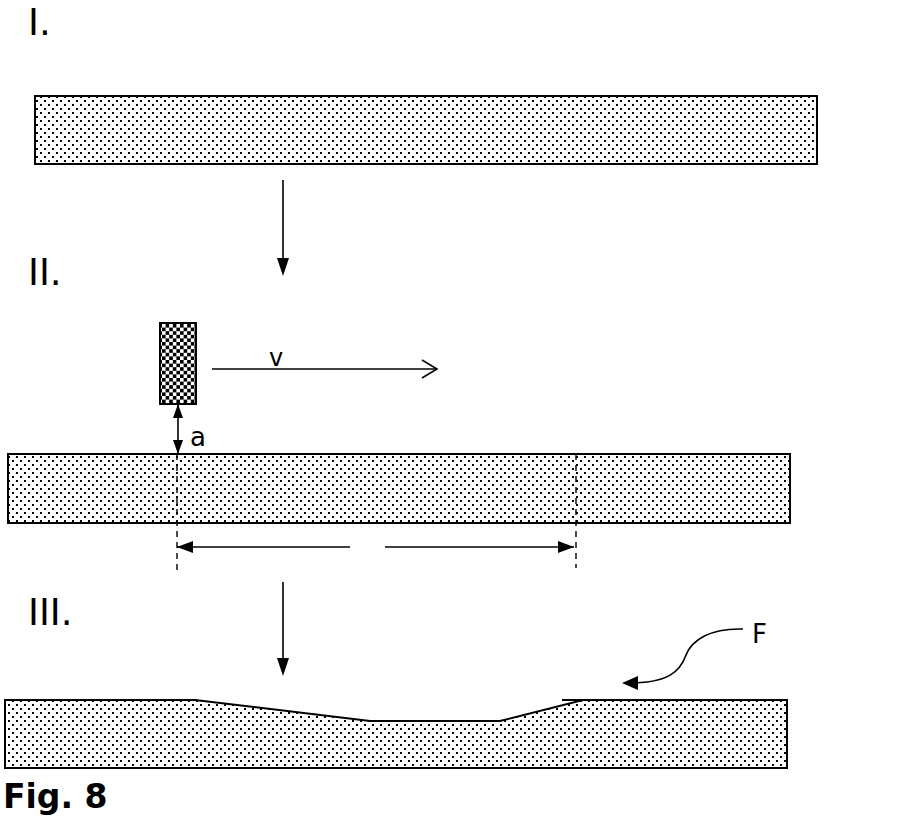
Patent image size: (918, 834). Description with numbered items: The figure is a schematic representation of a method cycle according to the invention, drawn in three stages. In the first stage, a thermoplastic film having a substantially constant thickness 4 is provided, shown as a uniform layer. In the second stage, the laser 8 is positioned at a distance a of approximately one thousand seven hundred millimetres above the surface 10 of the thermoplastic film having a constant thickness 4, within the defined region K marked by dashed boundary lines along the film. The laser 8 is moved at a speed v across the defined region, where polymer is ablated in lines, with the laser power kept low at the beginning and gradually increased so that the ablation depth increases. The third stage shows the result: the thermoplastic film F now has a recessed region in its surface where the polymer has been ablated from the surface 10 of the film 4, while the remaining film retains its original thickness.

The thermoplastic film having a substantially constant thickness 4 is at (681, 96).
The laser 8 is at (168, 323).
The surface of the thermoplastic film 10 is at (522, 448).